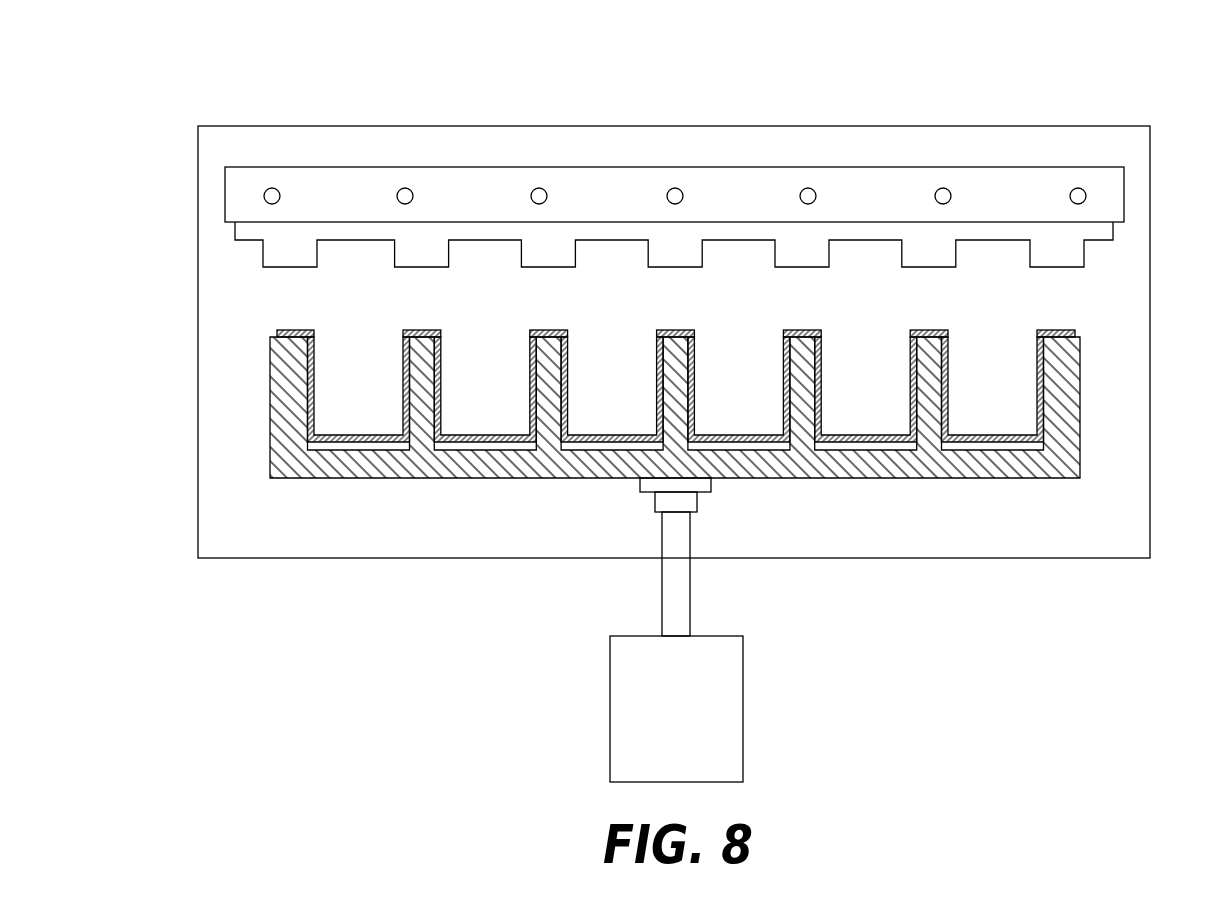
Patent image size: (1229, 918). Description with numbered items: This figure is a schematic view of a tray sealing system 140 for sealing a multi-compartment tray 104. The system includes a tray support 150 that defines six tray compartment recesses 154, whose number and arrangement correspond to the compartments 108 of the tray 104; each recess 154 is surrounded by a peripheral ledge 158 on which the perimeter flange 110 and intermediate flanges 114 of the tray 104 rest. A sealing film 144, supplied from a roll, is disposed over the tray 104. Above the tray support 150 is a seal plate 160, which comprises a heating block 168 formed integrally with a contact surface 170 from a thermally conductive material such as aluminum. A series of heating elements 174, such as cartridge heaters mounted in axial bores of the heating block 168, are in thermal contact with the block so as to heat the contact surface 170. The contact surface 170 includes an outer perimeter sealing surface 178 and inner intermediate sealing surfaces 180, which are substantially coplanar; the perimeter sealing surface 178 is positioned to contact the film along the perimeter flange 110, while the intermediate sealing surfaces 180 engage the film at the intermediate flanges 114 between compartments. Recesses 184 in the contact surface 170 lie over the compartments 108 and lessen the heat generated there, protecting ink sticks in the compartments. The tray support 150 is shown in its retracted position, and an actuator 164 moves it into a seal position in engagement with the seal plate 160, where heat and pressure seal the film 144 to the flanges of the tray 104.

The tray sealing system 140 is at (403, 107).
The seal plate 160 is at (674, 213).
The heating block 168 is at (352, 183).
The heating elements 174 is at (405, 188).
The perimeter sealing surface 178 is at (290, 258).
The contact surface 170 is at (275, 232).
The intermediate sealing surfaces 180 is at (405, 250).
The recesses 184 is at (730, 255).
The tray support 150 is at (1032, 470).
The intermediate flanges 114 is at (420, 330).
The peripheral ledge 158 is at (288, 355).
The perimeter flange 110 is at (297, 330).
The sealing film 144 is at (362, 330).
The compartments 108 is at (340, 410).
The multi-compartment tray 104 is at (337, 443).
The tray compartment recesses 154 is at (357, 443).
The actuator 164 is at (743, 709).